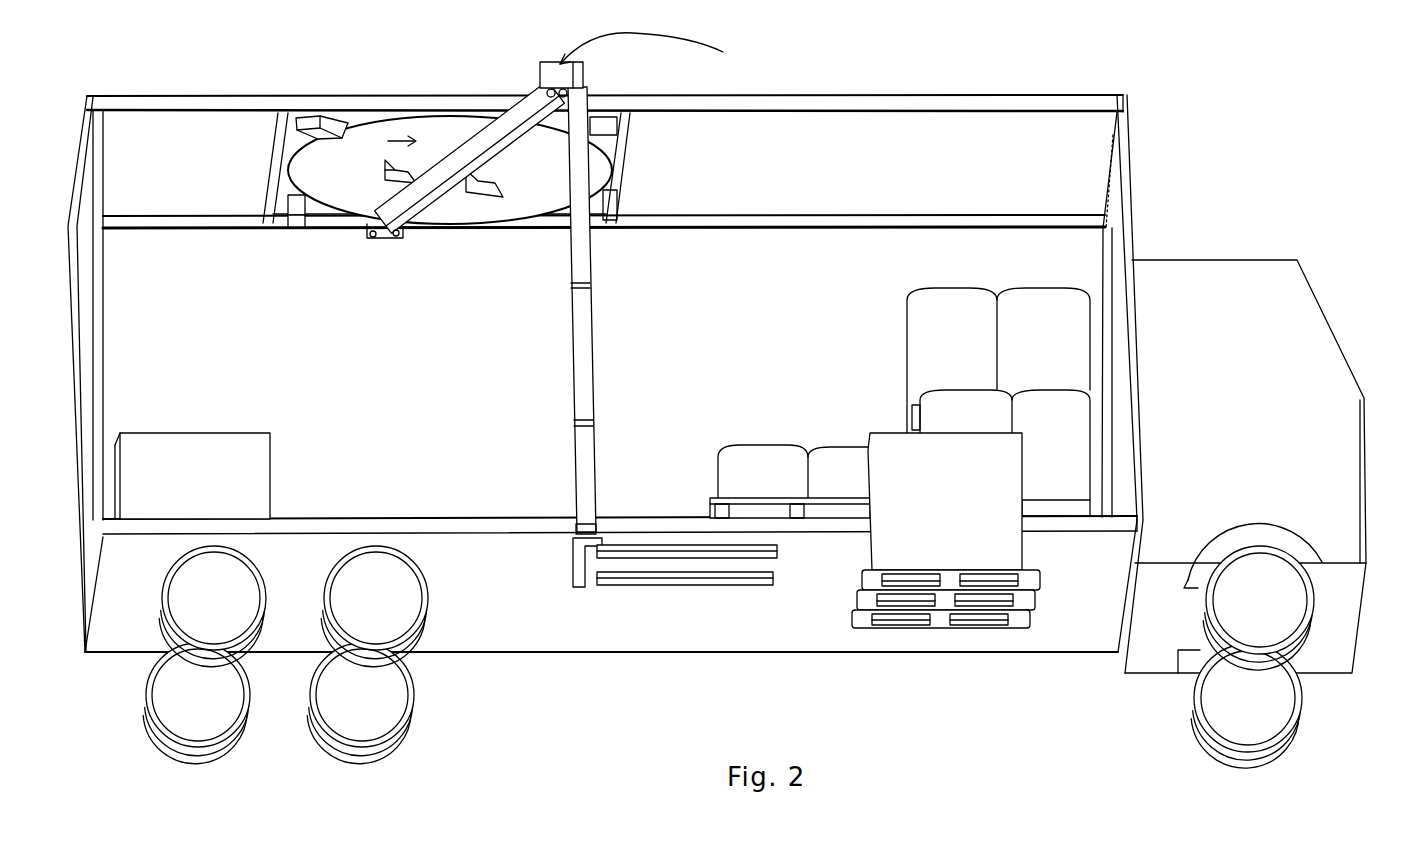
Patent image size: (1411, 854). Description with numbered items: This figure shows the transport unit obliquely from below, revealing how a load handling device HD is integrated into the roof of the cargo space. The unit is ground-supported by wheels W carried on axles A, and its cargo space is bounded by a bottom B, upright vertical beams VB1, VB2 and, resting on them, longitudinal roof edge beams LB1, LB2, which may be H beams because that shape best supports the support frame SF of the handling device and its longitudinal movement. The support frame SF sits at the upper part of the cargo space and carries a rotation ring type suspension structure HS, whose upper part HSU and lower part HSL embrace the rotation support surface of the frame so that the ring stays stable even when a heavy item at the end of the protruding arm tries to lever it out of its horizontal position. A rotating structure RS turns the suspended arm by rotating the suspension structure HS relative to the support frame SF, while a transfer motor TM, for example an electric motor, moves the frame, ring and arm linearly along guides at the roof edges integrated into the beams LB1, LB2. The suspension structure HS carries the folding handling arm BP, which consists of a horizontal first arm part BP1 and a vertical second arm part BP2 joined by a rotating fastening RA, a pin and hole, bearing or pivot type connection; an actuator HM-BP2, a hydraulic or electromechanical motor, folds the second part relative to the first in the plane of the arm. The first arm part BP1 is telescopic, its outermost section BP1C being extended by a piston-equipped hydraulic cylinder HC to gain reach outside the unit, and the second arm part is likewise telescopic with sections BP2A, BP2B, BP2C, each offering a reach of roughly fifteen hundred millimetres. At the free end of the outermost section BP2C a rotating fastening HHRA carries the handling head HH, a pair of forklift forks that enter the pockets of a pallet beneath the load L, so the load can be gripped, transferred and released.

The bottom B is at (355, 525).
The load L is at (257, 462).
The upright beam VB1 is at (82, 402).
The upright beam VB2 is at (105, 342).
The longitudinal roof beam LB1 is at (148, 220).
The longitudinal roof beam LB2 is at (172, 105).
The wheel W is at (225, 758).
The axle A is at (210, 692).
The suspension structure HS is at (325, 188).
The upper part of the suspension structure HSU is at (303, 134).
The lower part of the suspension structure HSL is at (527, 202).
The support frame SF is at (622, 177).
The transfer motor TM is at (293, 230).
The rotating structure RS is at (338, 120).
The handling device HD is at (348, 285).
The folding handling arm BP is at (487, 250).
The first arm part BP1 is at (470, 157).
The outermost part of the first arm part BP1C is at (524, 94).
The hydraulic cylinder HC is at (397, 222).
The second arm part BP2 is at (571, 310).
The first telescopic part of the second arm part BP2A is at (592, 255).
The middle telescopic part of the second arm part BP2B is at (595, 330).
The outermost telescopic part of the second arm part BP2C is at (597, 422).
The rotating fastening RA is at (590, 73).
The folding actuator HM-BP2 is at (692, 54).
The handling head rotating fastening HHRA is at (573, 540).
The handling head HH is at (588, 577).